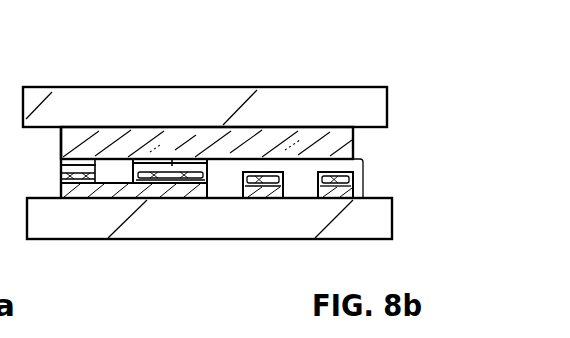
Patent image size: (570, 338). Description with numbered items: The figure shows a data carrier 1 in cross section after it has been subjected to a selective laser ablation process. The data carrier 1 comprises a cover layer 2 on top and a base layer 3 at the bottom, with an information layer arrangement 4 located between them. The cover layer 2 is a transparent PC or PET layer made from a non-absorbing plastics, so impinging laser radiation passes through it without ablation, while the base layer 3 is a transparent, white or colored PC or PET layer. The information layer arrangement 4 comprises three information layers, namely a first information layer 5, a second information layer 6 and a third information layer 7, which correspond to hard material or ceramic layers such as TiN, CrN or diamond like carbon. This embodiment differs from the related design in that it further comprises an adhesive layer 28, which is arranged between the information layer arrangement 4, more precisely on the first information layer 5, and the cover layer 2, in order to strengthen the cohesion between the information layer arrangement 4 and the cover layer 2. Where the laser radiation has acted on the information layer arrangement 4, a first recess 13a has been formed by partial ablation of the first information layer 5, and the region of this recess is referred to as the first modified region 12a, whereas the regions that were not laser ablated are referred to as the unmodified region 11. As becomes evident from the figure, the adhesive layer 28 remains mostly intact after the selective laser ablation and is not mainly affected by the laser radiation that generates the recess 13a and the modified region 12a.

The data carrier 1 is at (81, 78).
The cover layer 2 is at (326, 100).
The base layer 3 is at (72, 240).
The information layer arrangement 4 is at (364, 178).
The first information layer 5 is at (61, 163).
The second information layer 6 is at (61, 173).
The third information layer 7 is at (61, 188).
The unmodified region 11 is at (84, 156).
The first modified region 12a is at (124, 172).
The first recess 13a is at (298, 185).
The adhesive layer 28 is at (354, 141).